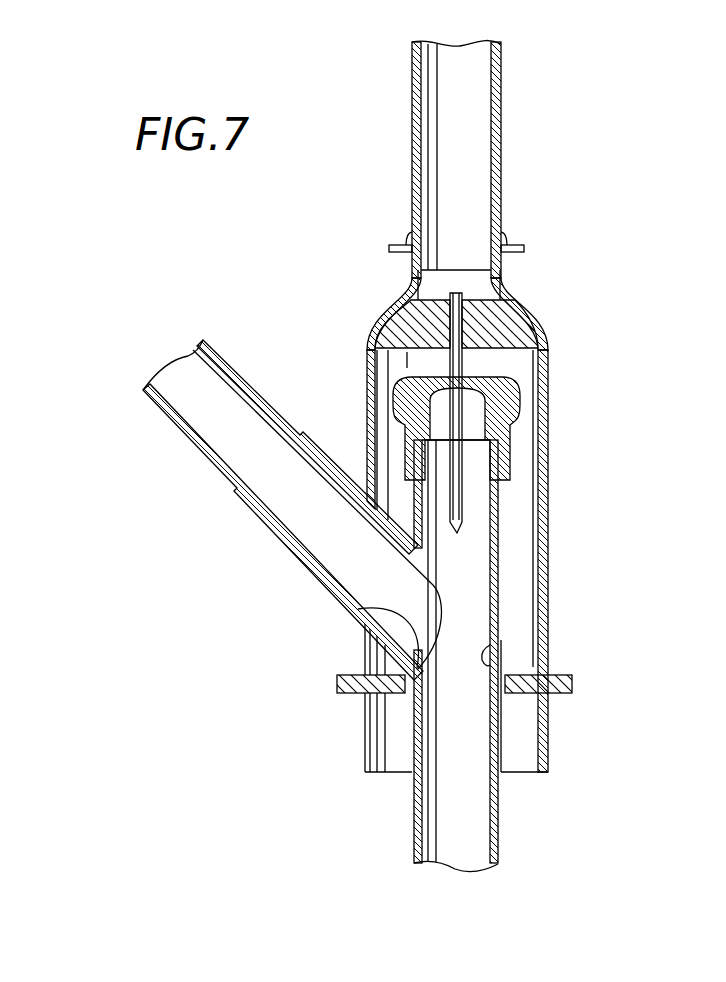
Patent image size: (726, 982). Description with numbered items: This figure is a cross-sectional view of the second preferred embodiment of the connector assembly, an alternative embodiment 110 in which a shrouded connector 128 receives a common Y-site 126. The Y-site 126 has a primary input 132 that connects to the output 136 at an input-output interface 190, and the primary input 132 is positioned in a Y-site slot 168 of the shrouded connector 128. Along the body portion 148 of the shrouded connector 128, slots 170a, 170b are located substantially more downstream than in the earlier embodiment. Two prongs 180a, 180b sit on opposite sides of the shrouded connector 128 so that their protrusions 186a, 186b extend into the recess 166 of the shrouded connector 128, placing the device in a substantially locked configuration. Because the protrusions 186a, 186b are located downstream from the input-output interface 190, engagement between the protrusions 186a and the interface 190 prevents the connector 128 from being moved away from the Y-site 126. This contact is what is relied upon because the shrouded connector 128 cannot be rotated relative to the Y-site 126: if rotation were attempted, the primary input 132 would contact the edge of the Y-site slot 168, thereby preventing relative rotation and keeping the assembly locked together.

The alternative embodiment 110 is at (585, 278).
The Y-site 126 is at (505, 530).
The shrouded connector 128 is at (548, 431).
The primary input 132 is at (322, 550).
The output 136 is at (470, 825).
The body portion 148 is at (549, 505).
The recess 166 is at (398, 768).
The Y-site slot 168 is at (365, 468).
The slot 170a is at (357, 695).
The slot 170b is at (567, 697).
The prong 180a is at (337, 683).
The prong 180b is at (573, 684).
The protrusion 186a is at (418, 712).
The protrusion 186b is at (500, 641).
The input-output interface 190 is at (358, 609).